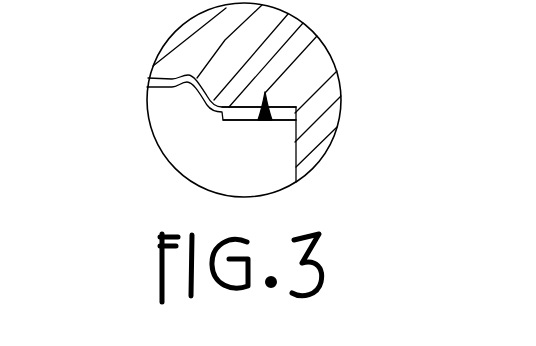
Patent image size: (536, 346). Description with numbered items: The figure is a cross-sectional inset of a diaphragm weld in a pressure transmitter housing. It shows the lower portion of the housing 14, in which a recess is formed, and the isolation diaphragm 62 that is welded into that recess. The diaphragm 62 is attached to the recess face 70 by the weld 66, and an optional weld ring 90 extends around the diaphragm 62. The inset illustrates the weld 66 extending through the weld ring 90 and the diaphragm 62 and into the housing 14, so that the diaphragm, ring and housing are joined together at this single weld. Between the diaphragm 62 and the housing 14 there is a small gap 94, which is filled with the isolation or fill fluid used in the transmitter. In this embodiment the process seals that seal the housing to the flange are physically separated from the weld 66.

The housing body 14 is at (310, 114).
The outer wall 62 is at (162, 84).
The plate 66 is at (262, 121).
The top surface of plate 70 is at (276, 118).
The flow direction arrow 90 is at (284, 111).
The inner surface of wall 94 is at (180, 85).